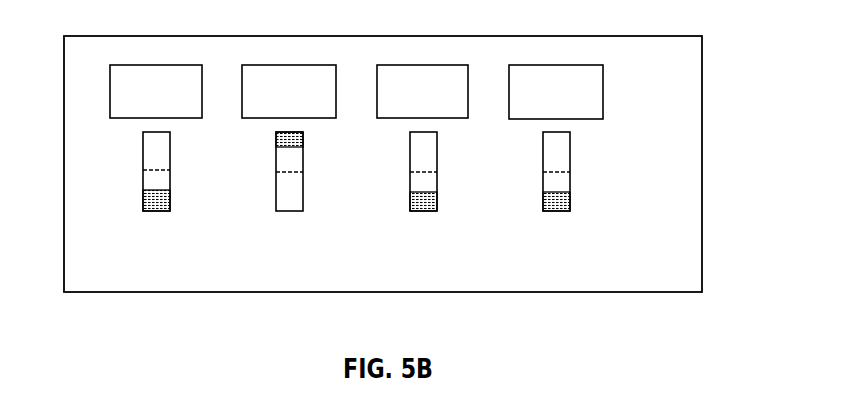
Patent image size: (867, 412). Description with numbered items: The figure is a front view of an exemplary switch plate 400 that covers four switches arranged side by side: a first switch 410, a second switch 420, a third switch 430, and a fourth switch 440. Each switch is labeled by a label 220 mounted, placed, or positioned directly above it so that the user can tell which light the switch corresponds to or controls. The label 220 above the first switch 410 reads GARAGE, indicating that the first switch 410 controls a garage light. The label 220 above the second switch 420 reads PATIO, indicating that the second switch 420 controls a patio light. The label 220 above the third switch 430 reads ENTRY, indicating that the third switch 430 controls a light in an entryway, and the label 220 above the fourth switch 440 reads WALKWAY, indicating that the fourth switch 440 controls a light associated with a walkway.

The switch plate 400 is at (702, 65).
The label 220 is at (160, 65).
The first switch 410 is at (170, 158).
The second switch 420 is at (303, 158).
The third switch 430 is at (437, 158).
The fourth switch 440 is at (570, 158).